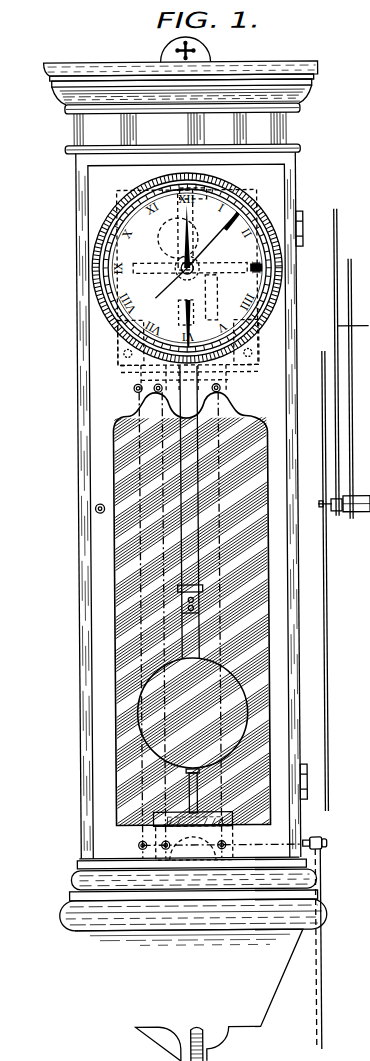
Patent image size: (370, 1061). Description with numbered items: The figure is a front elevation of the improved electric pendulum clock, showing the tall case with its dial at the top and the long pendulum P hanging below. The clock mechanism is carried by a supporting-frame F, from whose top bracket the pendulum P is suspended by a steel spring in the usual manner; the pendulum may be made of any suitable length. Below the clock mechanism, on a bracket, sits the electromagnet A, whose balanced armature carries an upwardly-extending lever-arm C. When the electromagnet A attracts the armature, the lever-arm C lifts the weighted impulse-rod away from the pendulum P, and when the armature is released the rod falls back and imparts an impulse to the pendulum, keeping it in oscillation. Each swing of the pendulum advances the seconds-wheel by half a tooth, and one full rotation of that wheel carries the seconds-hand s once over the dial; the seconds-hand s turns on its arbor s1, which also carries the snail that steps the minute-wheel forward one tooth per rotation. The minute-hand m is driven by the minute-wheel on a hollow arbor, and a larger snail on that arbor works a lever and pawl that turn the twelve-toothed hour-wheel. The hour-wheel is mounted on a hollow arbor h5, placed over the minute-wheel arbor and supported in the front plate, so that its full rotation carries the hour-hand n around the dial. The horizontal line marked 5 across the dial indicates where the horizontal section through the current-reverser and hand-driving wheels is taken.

The section line 5 5 is at (314, 267).
The lever-arm C is at (187, 276).
The hour-hand n is at (180, 239).
The minute-hand m is at (178, 310).
The electromagnet A is at (252, 337).
The supporting-frame F is at (150, 343).
The pendulum P is at (192, 596).
The seconds-hand s is at (281, 524).
The arbor of the seconds-hand s1 is at (320, 507).
The hollow arbor h5 is at (367, 514).